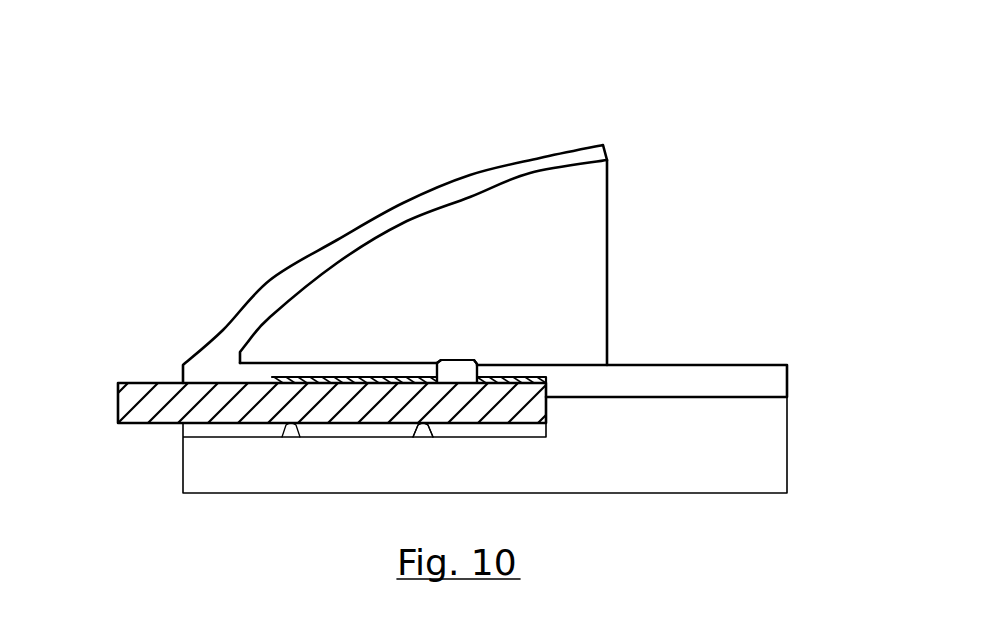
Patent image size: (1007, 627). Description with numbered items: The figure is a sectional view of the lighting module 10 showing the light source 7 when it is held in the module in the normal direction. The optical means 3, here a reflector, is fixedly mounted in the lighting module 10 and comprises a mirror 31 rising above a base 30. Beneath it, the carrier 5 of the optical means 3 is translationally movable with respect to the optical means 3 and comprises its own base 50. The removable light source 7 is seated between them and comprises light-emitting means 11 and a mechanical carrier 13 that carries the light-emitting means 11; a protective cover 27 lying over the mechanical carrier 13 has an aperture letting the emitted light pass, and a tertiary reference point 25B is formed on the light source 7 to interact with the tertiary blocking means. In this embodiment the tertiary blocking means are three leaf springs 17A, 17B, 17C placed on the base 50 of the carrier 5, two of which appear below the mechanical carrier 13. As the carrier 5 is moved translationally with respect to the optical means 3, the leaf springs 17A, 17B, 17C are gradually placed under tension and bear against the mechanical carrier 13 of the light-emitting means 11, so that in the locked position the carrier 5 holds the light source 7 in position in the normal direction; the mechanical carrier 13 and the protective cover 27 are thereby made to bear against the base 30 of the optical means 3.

The lighting module 10 is at (302, 150).
The optical means 3 is at (753, 215).
The mirror 31 is at (610, 287).
The base 30 is at (617, 377).
The light source 7 is at (85, 350).
The mechanical carrier 13 is at (151, 393).
The protective cover 27 is at (325, 382).
The tertiary reference point 25B is at (472, 325).
The light-emitting means 11 is at (468, 360).
The carrier of the optical means 5 is at (800, 402).
The base 50 is at (658, 445).
The leaf spring 17A is at (433, 425).
The leaf spring 17B is at (283, 433).
The leaf spring 17C is at (527, 454).